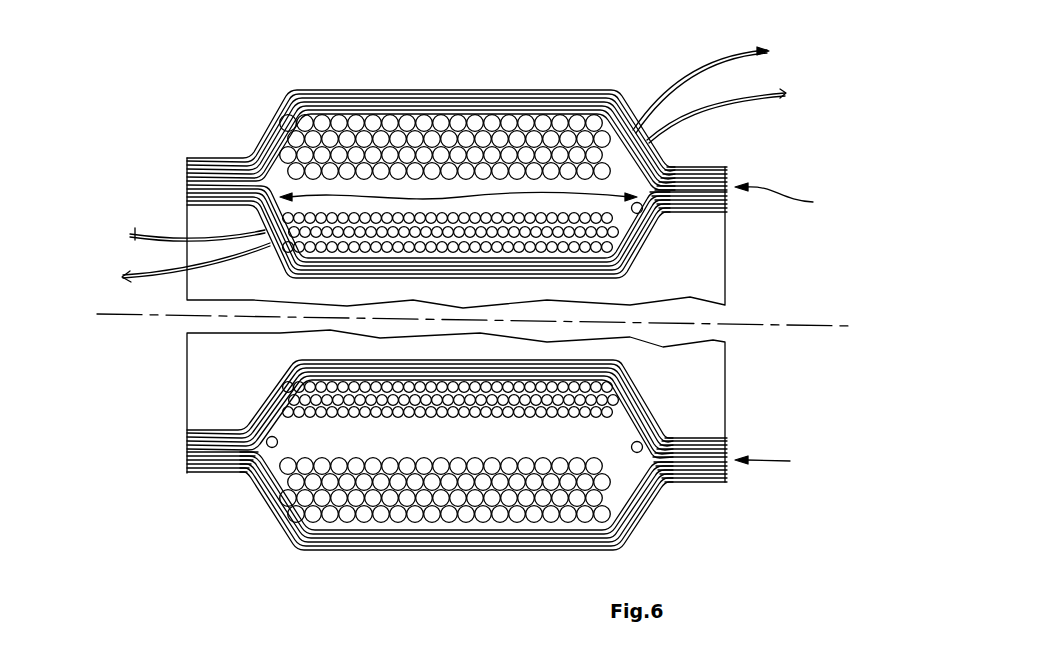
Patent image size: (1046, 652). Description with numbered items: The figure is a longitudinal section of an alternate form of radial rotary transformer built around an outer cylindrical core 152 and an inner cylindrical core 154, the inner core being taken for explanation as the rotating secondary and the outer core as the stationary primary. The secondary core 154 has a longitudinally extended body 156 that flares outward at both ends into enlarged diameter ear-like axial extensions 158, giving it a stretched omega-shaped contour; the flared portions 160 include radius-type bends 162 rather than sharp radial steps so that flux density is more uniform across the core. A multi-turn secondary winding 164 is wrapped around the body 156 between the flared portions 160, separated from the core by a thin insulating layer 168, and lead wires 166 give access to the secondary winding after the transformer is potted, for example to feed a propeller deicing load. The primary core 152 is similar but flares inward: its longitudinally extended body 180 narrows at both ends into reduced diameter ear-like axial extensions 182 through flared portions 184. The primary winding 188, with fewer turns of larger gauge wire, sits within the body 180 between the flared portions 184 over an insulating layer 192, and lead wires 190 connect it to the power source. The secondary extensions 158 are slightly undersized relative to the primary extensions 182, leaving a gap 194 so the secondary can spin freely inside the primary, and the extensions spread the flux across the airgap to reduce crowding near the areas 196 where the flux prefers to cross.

The outer cylindrical core 152 is at (458, 557).
The inner cylindrical core 154 is at (262, 375).
The longitudinally extended body 156 is at (377, 362).
The ear-like axial extensions 158 is at (207, 207).
The flared portions 160 is at (260, 402).
The radius-type bends 162 is at (278, 238).
The secondary winding 164 is at (517, 386).
The lead wires 166 is at (134, 250).
The insulating layer 168 is at (643, 210).
The longitudinally extended body 180 is at (440, 90).
The ear-like axial extensions 182 is at (680, 167).
The flared portions 184 is at (260, 507).
The primary winding 188 is at (542, 122).
The lead wires 190 is at (775, 72).
The insulating layer 192 is at (690, 170).
The gap 194 is at (795, 328).
The areas 196 is at (458, 199).